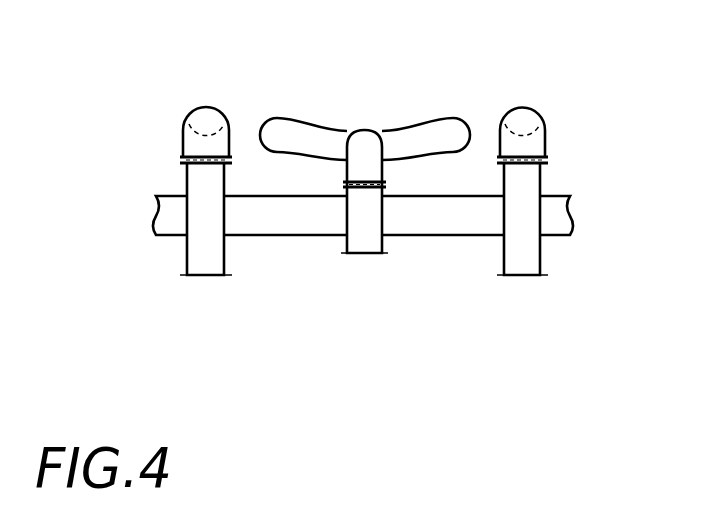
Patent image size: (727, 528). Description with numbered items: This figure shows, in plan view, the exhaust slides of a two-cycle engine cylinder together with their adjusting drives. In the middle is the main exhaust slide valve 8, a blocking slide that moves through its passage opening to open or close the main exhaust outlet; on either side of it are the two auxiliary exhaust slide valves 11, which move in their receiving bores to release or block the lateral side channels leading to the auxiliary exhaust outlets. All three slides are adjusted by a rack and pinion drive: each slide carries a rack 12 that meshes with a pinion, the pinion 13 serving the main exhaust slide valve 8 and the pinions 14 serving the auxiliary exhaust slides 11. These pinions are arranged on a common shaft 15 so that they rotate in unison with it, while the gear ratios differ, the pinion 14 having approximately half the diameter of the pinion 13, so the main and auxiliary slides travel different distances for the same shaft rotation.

The main exhaust slide valve 8 is at (413, 140).
The auxiliary exhaust slide valve 11 is at (208, 125).
The rack 12 is at (183, 150).
The pinion 13 is at (362, 240).
The pinion 14 is at (210, 253).
The common shaft 15 is at (297, 215).